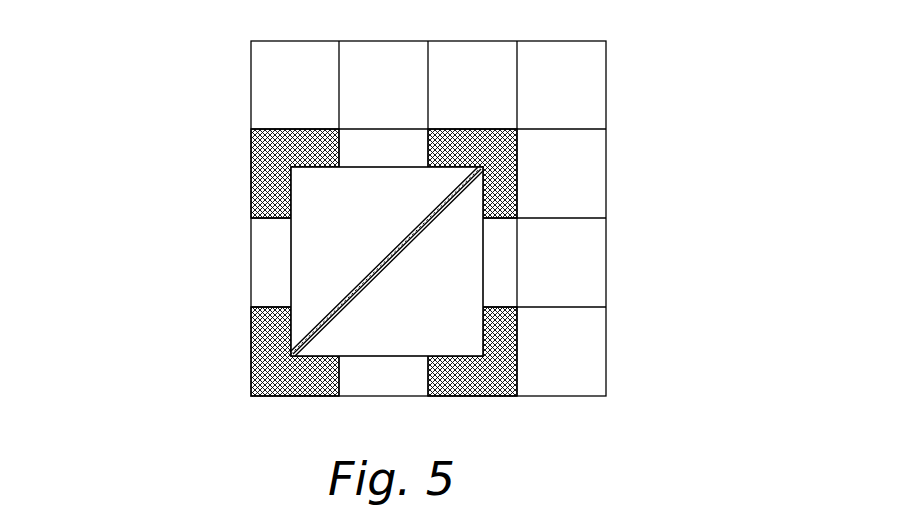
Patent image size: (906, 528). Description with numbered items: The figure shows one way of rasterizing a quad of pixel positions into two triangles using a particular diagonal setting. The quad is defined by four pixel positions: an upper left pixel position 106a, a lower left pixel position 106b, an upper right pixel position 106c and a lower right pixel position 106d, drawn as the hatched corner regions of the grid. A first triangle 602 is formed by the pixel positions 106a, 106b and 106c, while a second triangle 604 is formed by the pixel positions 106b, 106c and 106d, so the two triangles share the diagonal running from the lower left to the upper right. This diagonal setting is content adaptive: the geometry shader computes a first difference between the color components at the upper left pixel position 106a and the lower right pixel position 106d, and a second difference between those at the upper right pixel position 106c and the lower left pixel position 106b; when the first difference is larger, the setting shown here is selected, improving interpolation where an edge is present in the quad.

The upper left pixel position 106a is at (251, 165).
The lower left pixel position 106b is at (251, 365).
The upper right pixel position 106c is at (517, 153).
The lower right pixel position 106d is at (517, 333).
The first triangle 602 is at (370, 234).
The second triangle 604 is at (445, 311).